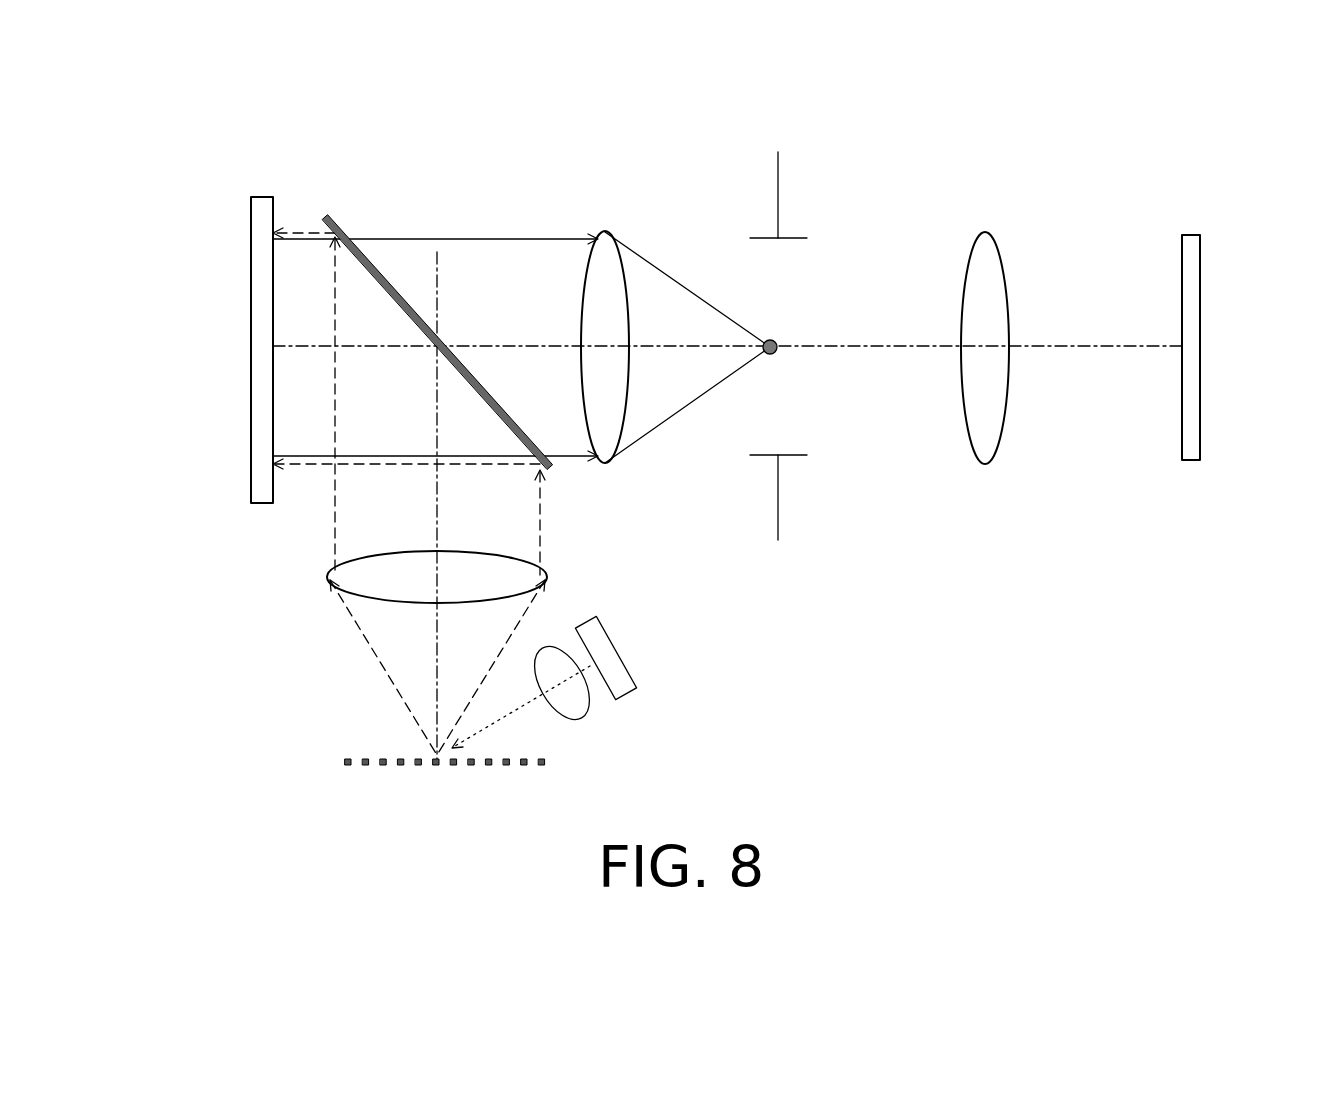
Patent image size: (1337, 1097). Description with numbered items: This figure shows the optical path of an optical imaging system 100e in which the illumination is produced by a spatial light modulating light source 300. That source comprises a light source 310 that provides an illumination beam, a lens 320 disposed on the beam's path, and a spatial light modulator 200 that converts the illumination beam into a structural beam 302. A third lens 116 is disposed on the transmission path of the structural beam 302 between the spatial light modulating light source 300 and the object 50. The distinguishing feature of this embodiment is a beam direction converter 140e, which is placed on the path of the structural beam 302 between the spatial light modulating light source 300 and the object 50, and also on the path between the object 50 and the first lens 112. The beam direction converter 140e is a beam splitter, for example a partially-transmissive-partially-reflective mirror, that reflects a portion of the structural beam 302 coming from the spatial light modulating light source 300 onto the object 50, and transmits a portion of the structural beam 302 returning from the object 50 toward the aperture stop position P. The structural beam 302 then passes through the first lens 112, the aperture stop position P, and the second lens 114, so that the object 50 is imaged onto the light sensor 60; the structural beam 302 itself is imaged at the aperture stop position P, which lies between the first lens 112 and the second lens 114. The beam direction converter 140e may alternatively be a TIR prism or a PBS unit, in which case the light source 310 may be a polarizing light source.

The object 50 is at (258, 407).
The light sensor 60 is at (1192, 410).
The optical imaging system 100e is at (728, 407).
The first lens 112 is at (545, 580).
The second lens 114 is at (980, 440).
The third lens 116 is at (610, 433).
The beam direction converter 140e is at (330, 217).
The spatial light modulator 200 is at (525, 776).
The spatial light modulating light source 300 is at (586, 703).
The structural beam 302 is at (505, 238).
The light source 310 is at (617, 672).
The lens 320 is at (580, 707).
The aperture stop position P is at (778, 126).